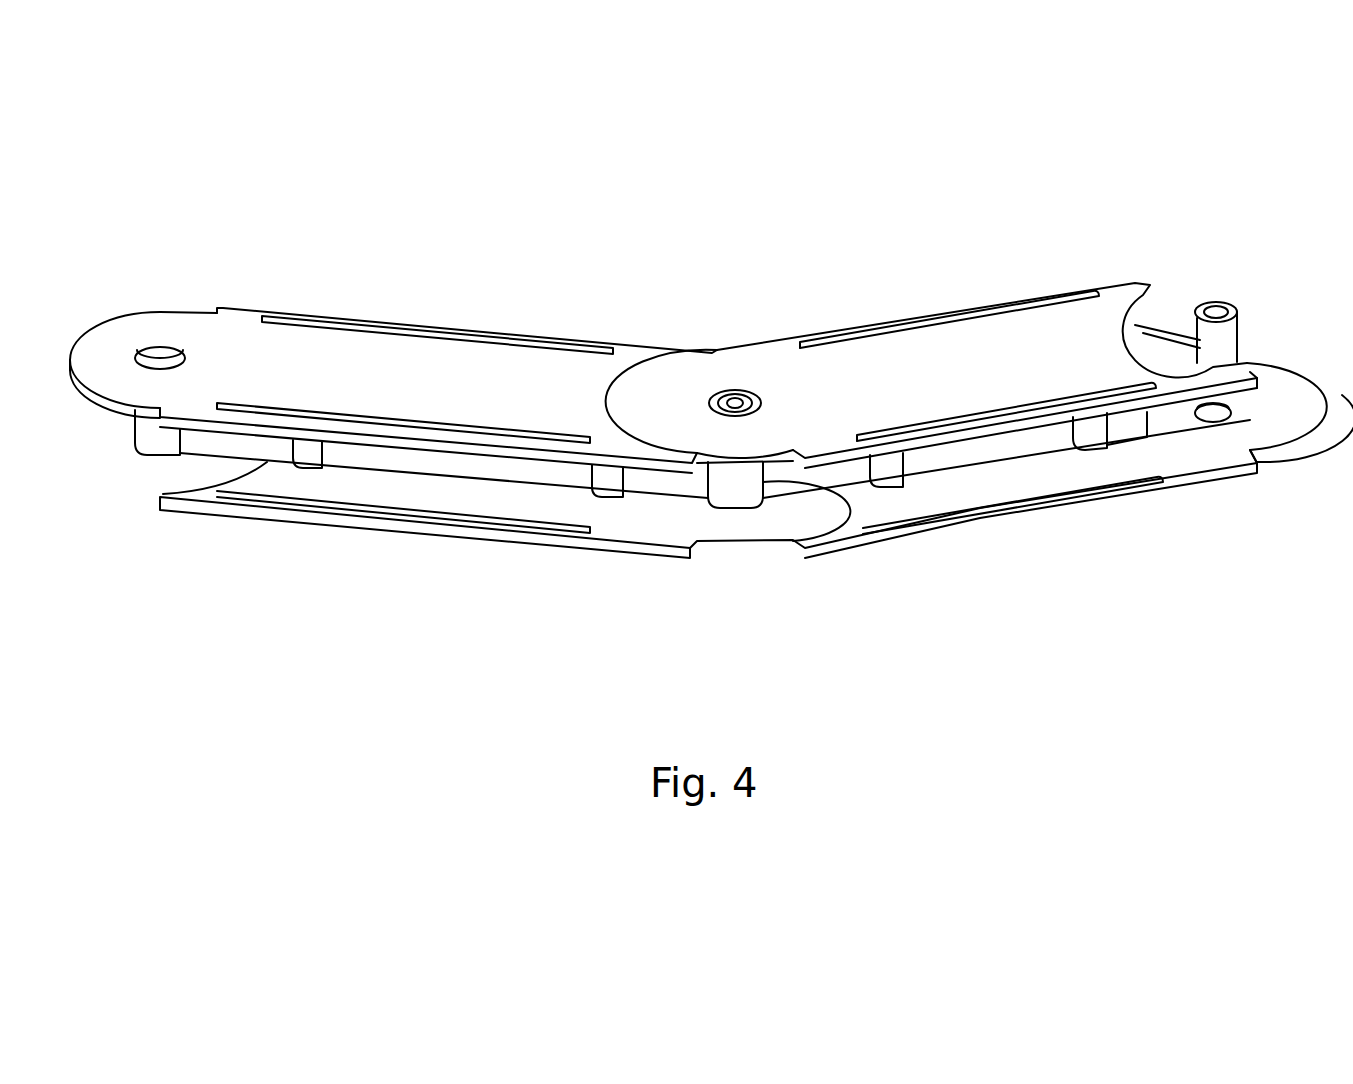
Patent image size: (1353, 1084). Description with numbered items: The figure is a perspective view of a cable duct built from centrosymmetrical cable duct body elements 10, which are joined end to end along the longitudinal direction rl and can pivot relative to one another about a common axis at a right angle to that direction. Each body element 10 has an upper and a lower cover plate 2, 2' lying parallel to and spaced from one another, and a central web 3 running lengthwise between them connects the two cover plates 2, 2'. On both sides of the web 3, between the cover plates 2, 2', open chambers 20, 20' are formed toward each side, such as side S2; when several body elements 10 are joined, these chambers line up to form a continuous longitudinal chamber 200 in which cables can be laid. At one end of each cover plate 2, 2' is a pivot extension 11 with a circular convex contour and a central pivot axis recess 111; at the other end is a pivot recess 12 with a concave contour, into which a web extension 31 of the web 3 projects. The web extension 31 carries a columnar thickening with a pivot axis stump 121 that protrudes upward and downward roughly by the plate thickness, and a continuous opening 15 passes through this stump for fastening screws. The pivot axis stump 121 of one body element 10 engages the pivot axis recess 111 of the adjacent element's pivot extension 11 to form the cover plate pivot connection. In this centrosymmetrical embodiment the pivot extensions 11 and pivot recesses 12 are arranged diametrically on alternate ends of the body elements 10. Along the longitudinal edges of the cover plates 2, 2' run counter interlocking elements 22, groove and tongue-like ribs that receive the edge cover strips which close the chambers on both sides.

The upper cover plate 2 is at (486, 447).
The lower cover plate 2' is at (839, 506).
The web 3 is at (923, 457).
The cable duct body element 10 is at (350, 373).
The pivot extension 11 is at (110, 350).
The pivot recess 12 is at (1138, 310).
The continuous opening 15 is at (735, 400).
The open chamber 20 is at (708, 544).
The open chamber 20' is at (484, 291).
The counter interlocking element 22 is at (290, 320).
The web extension 31 is at (1160, 325).
The pivot axis recess 111 is at (160, 347).
The pivot axis stump 121 is at (157, 440).
The continuous longitudinal chamber 200 is at (733, 477).
The side S2 is at (569, 238).
The longitudinal direction rl is at (785, 271).